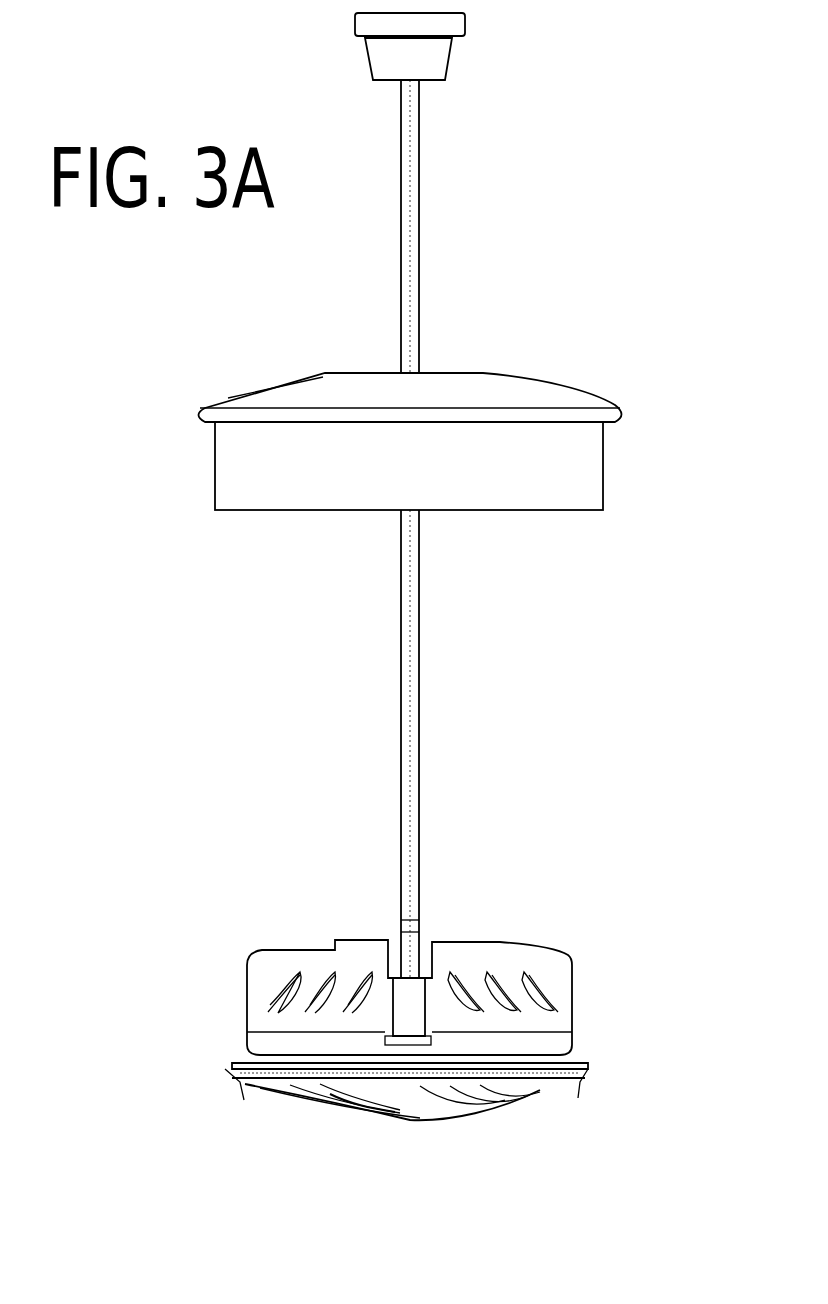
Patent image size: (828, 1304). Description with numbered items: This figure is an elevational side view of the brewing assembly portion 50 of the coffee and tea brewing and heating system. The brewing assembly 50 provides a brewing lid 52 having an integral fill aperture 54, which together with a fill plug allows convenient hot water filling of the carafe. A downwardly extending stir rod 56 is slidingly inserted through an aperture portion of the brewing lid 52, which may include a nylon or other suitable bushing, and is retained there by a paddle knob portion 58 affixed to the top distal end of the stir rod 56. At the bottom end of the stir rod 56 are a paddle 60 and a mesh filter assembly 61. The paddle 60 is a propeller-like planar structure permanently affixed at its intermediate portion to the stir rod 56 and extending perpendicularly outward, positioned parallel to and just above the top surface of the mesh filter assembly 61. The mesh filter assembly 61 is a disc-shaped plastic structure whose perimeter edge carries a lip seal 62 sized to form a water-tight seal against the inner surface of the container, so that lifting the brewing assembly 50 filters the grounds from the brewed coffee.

The brewing assembly portion 50 is at (235, 650).
The brewing lid 52 is at (505, 490).
The integral fill aperture 54 is at (270, 386).
The stir rod 56 is at (419, 235).
The paddle knob portion 58 is at (466, 24).
The paddle 60 is at (500, 963).
The mesh filter assembly 61 is at (530, 1092).
The lip seal 62 is at (590, 1063).